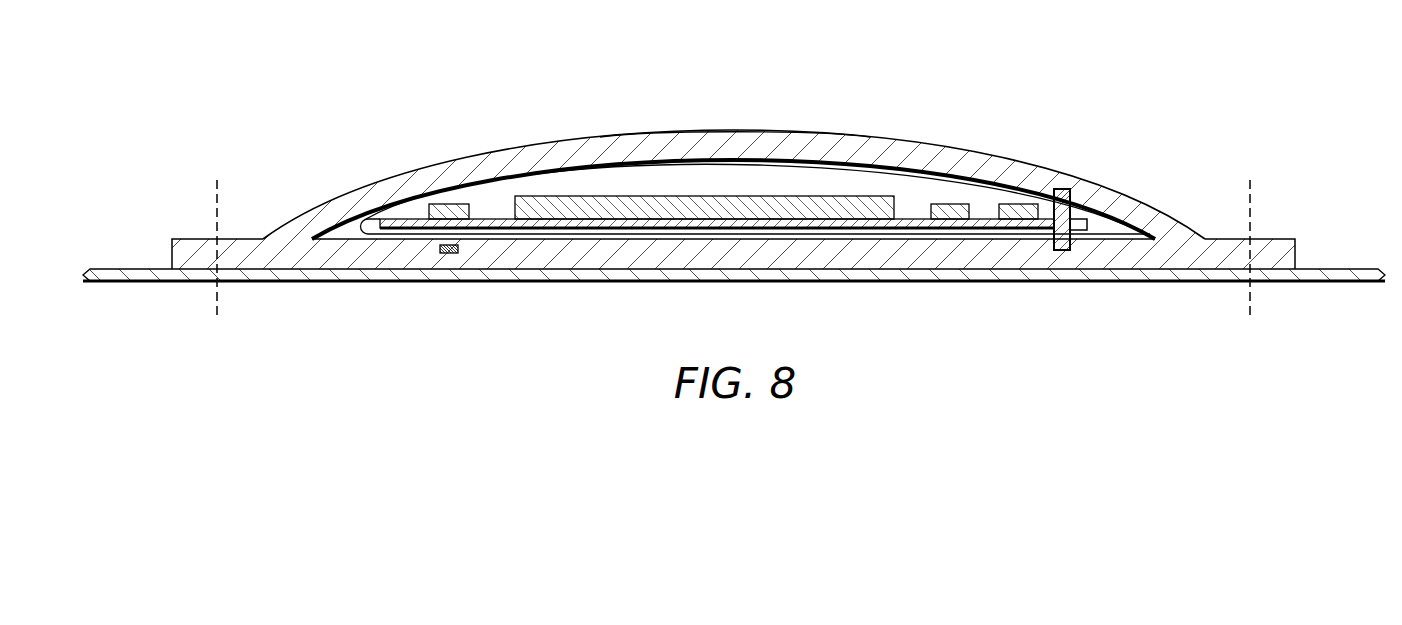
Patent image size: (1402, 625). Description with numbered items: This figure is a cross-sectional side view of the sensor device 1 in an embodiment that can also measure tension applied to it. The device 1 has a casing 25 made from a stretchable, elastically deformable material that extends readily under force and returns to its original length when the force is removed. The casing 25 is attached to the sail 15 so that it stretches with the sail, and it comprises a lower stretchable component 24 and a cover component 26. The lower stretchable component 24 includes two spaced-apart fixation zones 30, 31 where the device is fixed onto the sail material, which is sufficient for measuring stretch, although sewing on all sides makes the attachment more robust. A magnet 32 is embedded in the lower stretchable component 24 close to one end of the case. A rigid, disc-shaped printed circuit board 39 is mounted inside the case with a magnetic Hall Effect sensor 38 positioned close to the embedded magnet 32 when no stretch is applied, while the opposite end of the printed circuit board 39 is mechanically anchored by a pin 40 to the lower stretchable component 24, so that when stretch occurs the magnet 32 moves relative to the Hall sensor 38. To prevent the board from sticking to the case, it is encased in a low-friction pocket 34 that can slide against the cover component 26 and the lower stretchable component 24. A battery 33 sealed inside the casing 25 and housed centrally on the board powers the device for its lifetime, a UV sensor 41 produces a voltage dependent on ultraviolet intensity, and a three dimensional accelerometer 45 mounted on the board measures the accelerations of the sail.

The device 1 is at (931, 66).
The sail 15 is at (118, 277).
The lower stretchable component 24 is at (737, 262).
The casing 25 is at (1133, 174).
The cover component 26 is at (737, 128).
The fixation zone 30 is at (208, 229).
The fixation zone 31 is at (1260, 229).
The magnet 32 is at (450, 255).
The battery 33 is at (535, 198).
The pocket 34 is at (866, 162).
The magnetic Hall Effect sensor 38 is at (440, 205).
The printed circuit board 39 is at (912, 228).
The pin 40 is at (1063, 250).
The UV sensor 41 is at (1018, 204).
The three dimensional accelerometer 45 is at (950, 204).